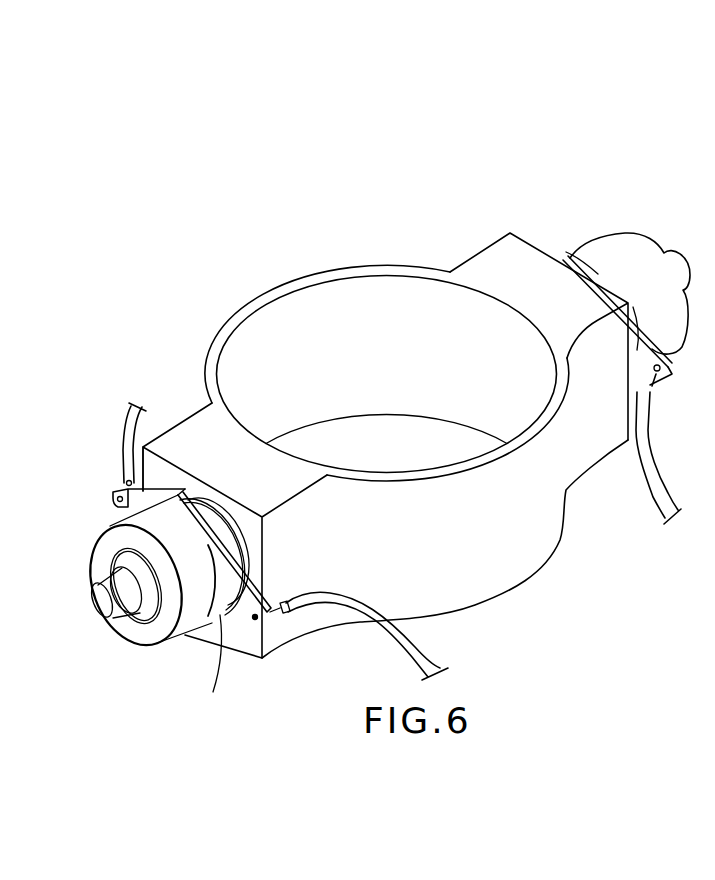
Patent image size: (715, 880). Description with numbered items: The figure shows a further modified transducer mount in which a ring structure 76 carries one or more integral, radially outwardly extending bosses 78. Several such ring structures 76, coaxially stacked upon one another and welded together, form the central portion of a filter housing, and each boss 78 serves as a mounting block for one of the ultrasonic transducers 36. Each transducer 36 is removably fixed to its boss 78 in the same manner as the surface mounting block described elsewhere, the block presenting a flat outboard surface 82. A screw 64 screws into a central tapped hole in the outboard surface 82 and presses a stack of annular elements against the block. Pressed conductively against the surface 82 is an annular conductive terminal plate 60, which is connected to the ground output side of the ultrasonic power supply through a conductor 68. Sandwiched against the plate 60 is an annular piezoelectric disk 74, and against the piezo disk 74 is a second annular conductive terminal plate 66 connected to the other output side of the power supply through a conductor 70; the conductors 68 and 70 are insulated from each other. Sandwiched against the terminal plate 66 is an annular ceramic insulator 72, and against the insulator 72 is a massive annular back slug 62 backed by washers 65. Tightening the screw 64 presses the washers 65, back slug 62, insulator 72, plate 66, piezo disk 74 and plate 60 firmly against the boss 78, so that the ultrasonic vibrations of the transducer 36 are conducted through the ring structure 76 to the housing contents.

The ultrasonic transducer 36 is at (108, 700).
The annular conductive terminal plate 60 is at (118, 505).
The back slug 62 is at (105, 538).
The screw 64 is at (100, 612).
The washers 65 is at (110, 565).
The second annular conductive terminal plate 66 is at (212, 674).
The conductor 68 is at (125, 422).
The conductor 70 is at (392, 637).
The annular ceramic insulator 72 is at (185, 630).
The annular piezoelectric disk 74 is at (210, 512).
The ring structure 76 is at (498, 567).
The boss 78 is at (175, 460).
The flat outboard surface 82 is at (158, 470).